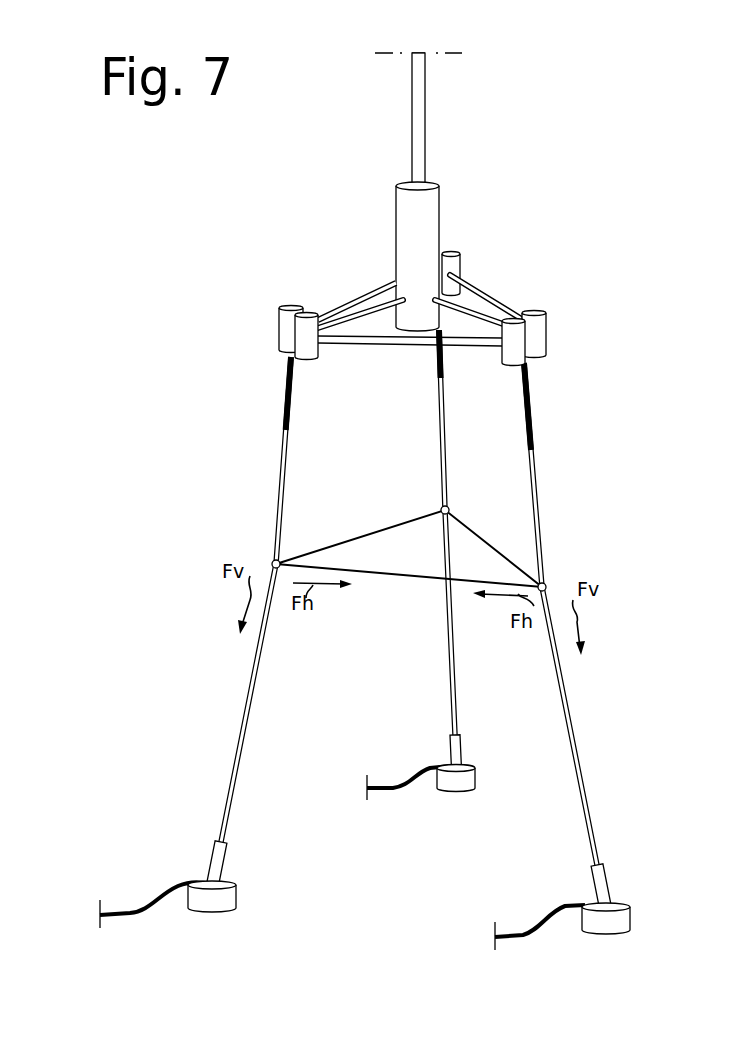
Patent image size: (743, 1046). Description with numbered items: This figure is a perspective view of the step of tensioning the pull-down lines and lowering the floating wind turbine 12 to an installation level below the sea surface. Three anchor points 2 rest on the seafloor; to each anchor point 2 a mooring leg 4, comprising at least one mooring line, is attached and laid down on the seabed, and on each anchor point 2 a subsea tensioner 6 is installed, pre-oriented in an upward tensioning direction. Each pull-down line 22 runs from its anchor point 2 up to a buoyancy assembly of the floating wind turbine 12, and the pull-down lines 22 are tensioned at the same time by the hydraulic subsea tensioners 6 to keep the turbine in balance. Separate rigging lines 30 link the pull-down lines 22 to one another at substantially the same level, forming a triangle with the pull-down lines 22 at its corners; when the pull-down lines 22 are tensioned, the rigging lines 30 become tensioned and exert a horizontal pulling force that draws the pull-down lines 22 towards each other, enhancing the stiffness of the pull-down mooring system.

The anchor point 2 is at (228, 900).
The mooring leg 4 is at (165, 888).
The subsea tensioner 6 is at (218, 860).
The floating wind turbine 12 is at (525, 150).
The pull-down line 22 is at (538, 520).
The rigging line 30 is at (387, 527).